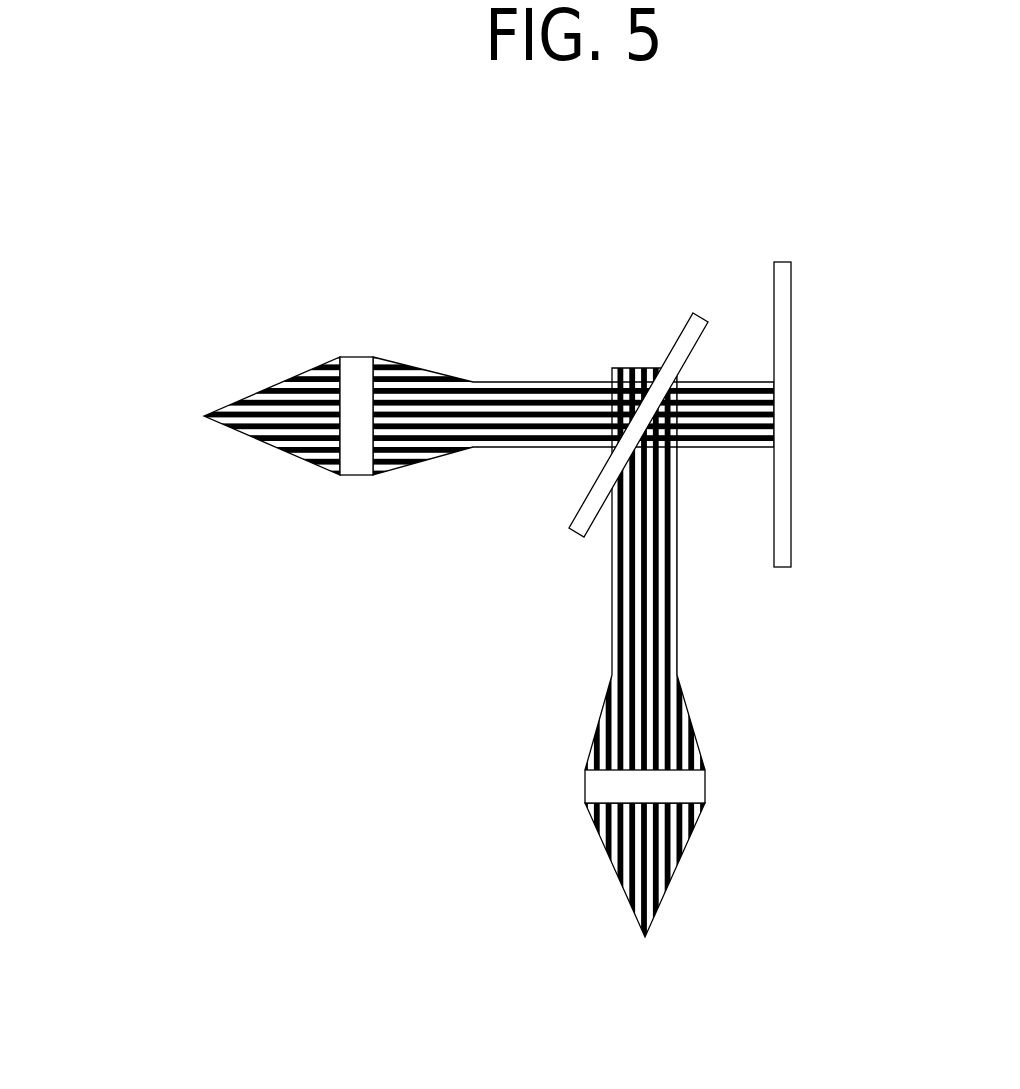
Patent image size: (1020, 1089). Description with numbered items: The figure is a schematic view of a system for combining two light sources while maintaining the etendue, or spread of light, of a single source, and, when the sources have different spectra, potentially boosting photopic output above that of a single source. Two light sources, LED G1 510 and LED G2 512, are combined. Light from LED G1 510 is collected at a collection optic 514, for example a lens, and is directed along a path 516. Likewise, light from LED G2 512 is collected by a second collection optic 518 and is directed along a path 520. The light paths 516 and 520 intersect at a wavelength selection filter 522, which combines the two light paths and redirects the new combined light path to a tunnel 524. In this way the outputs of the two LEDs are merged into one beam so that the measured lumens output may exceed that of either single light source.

The LED G1 510 is at (420, 415).
The LED G2 512 is at (644, 703).
The collection optic 514 is at (355, 357).
The path 516 is at (523, 382).
The second collection optic 518 is at (585, 787).
The path 520 is at (678, 627).
The wavelength selection filter 522 is at (677, 328).
The tunnel 524 is at (782, 262).